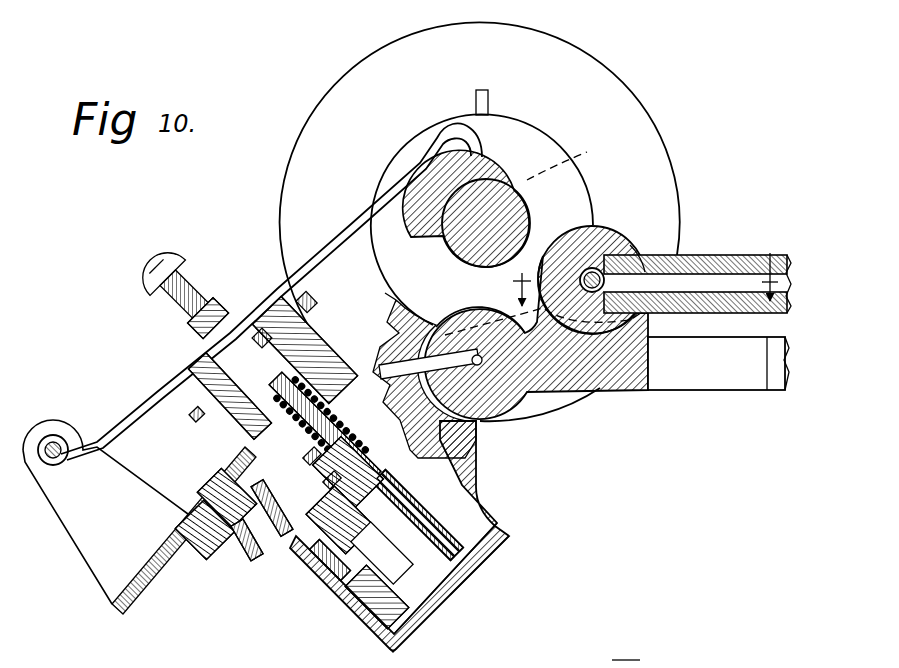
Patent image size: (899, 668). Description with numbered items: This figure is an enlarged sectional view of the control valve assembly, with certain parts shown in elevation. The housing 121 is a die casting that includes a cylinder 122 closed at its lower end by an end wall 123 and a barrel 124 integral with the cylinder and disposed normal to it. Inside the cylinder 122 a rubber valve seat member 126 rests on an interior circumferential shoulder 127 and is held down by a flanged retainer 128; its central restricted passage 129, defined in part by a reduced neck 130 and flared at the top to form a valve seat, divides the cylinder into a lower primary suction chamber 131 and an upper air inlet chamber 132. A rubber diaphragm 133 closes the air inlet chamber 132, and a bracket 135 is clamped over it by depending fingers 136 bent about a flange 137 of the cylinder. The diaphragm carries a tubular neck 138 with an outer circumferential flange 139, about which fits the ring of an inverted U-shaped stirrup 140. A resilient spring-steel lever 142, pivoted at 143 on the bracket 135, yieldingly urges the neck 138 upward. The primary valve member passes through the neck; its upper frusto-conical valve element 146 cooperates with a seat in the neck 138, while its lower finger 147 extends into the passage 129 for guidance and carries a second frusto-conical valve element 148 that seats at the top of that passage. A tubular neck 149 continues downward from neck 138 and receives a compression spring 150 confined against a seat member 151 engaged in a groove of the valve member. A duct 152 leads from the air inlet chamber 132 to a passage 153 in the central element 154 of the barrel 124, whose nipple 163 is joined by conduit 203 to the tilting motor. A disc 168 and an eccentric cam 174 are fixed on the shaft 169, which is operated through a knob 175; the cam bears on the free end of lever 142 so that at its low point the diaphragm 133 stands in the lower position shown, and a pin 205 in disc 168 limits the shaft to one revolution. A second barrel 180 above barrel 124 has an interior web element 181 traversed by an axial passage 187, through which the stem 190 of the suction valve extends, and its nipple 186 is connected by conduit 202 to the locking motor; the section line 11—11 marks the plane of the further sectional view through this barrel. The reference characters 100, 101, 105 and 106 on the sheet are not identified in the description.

The lever arm 100 is at (306, 340).
The arm cap 101 is at (292, 318).
The rod 105 is at (340, 404).
The housing 106 is at (628, 664).
The section line 11— 11 is at (788, 251).
The housing 121 is at (512, 544).
The cylinder 122 is at (390, 626).
The end wall 123 is at (470, 575).
The barrel 124 is at (522, 412).
The valve seat member 126 is at (330, 570).
The interior circumferential shoulder 127 is at (358, 605).
The flanged retainer 128 is at (315, 558).
The central restricted passage 129 is at (368, 552).
The reduced neck 130 is at (187, 483).
The primary suction chamber 131 is at (440, 617).
The air inlet chamber 132 is at (267, 530).
The diaphragm 133 is at (253, 455).
The bracket 135 is at (110, 565).
The depending fingers 136 is at (205, 555).
The flange 137 is at (240, 560).
The neck 138 is at (247, 417).
The outer circumferential flange 139 is at (202, 385).
The stirrup 140 is at (178, 340).
The lever 142 is at (142, 405).
The pivot 143 is at (50, 442).
The frusto-conical valve element 146 is at (262, 338).
The finger 147 is at (405, 503).
The frusto-conical valve element 148 is at (440, 464).
The tubular neck 149 is at (308, 460).
The compression spring 150 is at (330, 436).
The seat member 151 is at (328, 484).
The duct 152 is at (436, 338).
The passage 153 is at (479, 354).
The central element 154 is at (462, 308).
The nipple 163 is at (703, 373).
The disc 168 is at (543, 138).
The shaft 169 is at (578, 166).
The eccentric cam 174 is at (428, 190).
The handle or knob 175 is at (356, 64).
The second barrel 180 is at (565, 231).
The interior web element 181 is at (628, 250).
The second nipple 186 is at (690, 258).
The axial passage 187 is at (596, 266).
The stem 190 is at (614, 240).
The conduit 202 is at (796, 256).
The conduit 203 is at (777, 392).
The pin 205 is at (478, 92).